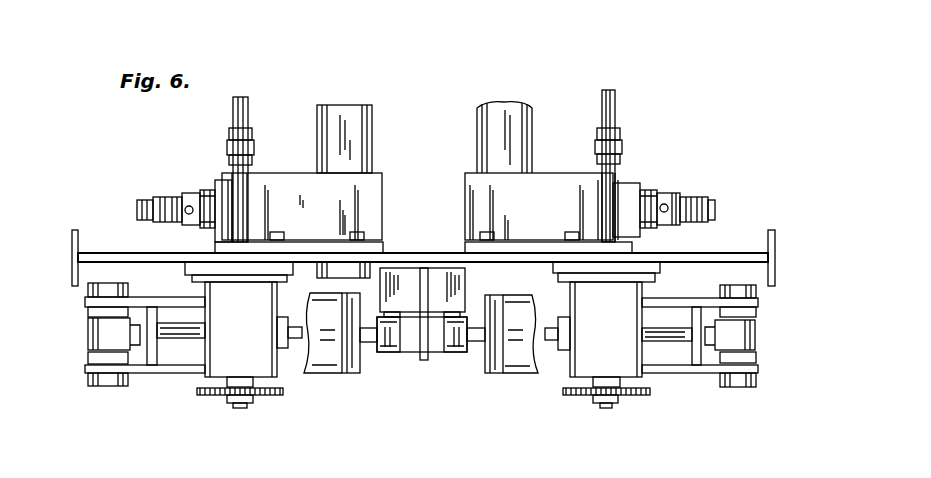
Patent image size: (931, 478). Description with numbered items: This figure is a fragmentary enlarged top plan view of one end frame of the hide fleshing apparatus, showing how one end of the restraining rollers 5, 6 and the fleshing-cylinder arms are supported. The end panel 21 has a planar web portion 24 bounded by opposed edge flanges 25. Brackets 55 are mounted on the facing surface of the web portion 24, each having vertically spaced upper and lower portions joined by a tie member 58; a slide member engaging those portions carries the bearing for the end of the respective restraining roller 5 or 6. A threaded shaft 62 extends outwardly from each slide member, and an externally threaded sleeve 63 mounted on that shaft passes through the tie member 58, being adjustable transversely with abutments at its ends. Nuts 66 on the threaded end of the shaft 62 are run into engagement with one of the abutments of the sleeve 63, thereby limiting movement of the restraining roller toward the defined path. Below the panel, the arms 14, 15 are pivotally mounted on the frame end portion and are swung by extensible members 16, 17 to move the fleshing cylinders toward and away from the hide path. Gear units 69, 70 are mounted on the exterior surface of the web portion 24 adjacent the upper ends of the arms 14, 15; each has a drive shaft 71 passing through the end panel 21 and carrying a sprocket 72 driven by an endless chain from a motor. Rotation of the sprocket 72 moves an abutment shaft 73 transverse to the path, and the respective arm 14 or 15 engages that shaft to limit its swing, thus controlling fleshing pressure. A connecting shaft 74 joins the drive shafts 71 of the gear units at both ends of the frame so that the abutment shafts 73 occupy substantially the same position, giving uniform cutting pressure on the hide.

The restraining roller 5 is at (369, 138).
The restraining roller 6 is at (490, 123).
The arm 14 is at (700, 372).
The arm 15 is at (146, 374).
The extensible member 16 is at (532, 374).
The extensible member 17 is at (327, 373).
The end panel 21 is at (117, 250).
The planar web portion 24 is at (166, 261).
The edge flange 25 is at (72, 258).
The bracket 55 is at (380, 173).
The tie member 58 is at (206, 192).
The threaded shaft 62 is at (140, 208).
The externally threaded sleeve 63 is at (180, 194).
The nut 66 is at (159, 198).
The gear unit 69 is at (568, 304).
The gear unit 70 is at (274, 377).
The drive shaft 71 is at (240, 408).
The sprocket 72 is at (215, 395).
The abutment shaft 73 is at (188, 338).
The connecting shaft 74 is at (248, 110).